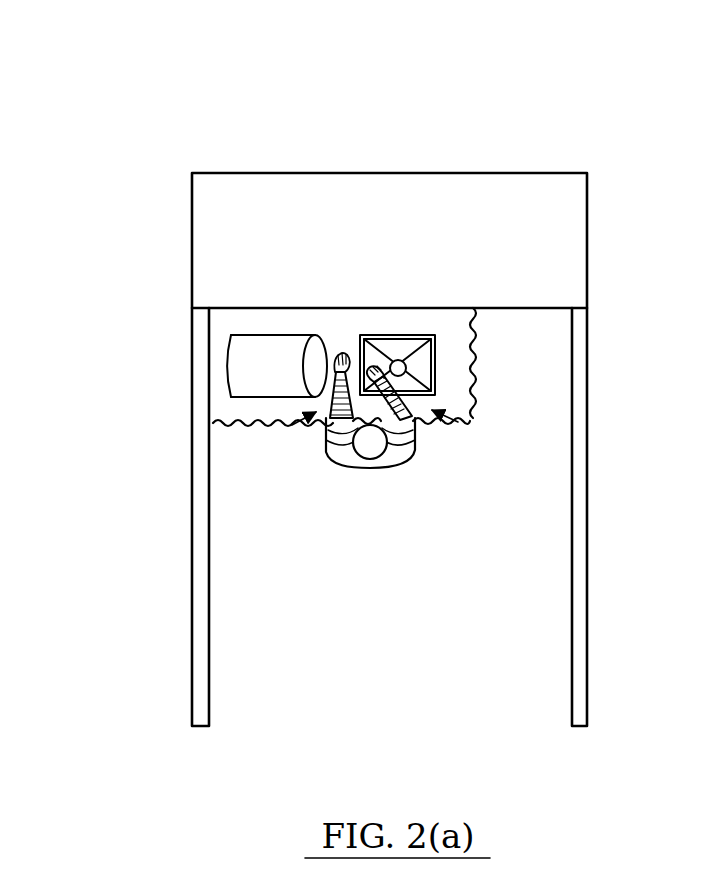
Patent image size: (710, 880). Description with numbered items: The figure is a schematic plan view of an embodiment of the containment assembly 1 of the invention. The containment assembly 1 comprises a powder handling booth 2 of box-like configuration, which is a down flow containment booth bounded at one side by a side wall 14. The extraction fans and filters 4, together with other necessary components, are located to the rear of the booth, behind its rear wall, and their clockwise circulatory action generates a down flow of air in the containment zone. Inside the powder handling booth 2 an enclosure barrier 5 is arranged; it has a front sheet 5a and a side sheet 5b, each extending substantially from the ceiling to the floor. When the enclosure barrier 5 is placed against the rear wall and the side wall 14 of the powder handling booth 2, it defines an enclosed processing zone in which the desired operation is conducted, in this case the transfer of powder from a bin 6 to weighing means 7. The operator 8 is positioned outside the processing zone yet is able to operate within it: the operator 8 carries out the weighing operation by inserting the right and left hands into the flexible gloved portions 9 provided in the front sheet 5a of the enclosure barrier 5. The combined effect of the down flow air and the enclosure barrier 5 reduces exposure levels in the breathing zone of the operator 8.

The containment assembly 1 is at (245, 143).
The powder handling booth 2 is at (443, 158).
The extraction fans and filters 4 is at (553, 238).
The enclosure barrier 5 is at (383, 419).
The front sheet 5a is at (466, 423).
The side sheet 5b is at (479, 366).
The bin 6 is at (275, 358).
The weighing means 7 is at (400, 335).
The operator 8 is at (370, 452).
The flexible gloved portions 9 is at (292, 425).
The side wall 14 is at (209, 370).